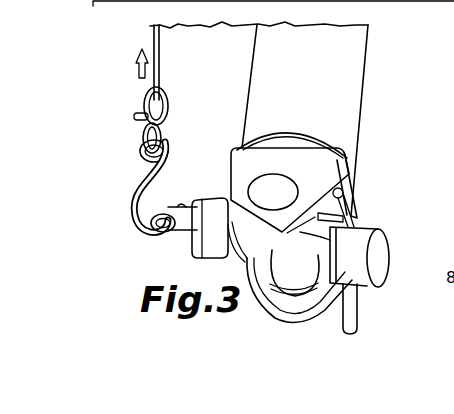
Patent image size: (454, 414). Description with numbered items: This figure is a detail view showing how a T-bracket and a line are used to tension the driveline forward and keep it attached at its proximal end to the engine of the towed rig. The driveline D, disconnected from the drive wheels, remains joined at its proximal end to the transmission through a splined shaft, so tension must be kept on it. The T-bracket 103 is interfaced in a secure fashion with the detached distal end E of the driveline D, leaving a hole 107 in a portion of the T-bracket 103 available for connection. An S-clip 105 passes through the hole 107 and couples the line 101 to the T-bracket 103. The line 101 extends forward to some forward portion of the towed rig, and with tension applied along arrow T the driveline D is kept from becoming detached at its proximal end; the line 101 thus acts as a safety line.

The line 101 is at (160, 58).
The T-bracket 103 is at (190, 208).
The S-clip 105 is at (132, 205).
The hole 107 is at (160, 237).
The driveline D is at (356, 53).
The distal end E is at (347, 137).
The arrow T is at (137, 70).